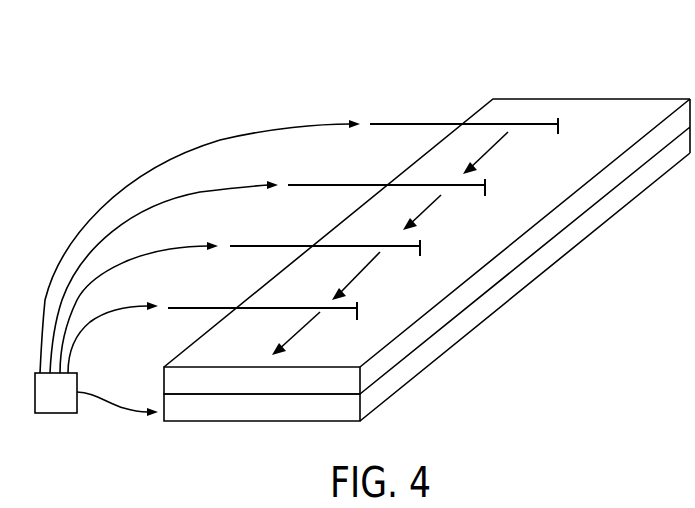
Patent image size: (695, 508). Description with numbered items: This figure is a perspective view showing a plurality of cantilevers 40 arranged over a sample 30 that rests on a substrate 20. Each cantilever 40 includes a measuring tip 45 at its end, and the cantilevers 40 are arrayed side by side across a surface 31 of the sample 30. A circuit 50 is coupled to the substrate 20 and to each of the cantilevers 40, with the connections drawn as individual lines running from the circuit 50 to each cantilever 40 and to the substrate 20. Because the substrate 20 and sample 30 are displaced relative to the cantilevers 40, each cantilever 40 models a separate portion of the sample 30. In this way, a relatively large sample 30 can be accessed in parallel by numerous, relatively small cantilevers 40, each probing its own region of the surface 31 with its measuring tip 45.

The substrate 20 is at (423, 354).
The sample 30 is at (557, 222).
The surface 31 is at (631, 90).
The cantilever 40 is at (410, 125).
The measuring tip 45 is at (572, 128).
The circuit 50 is at (47, 416).